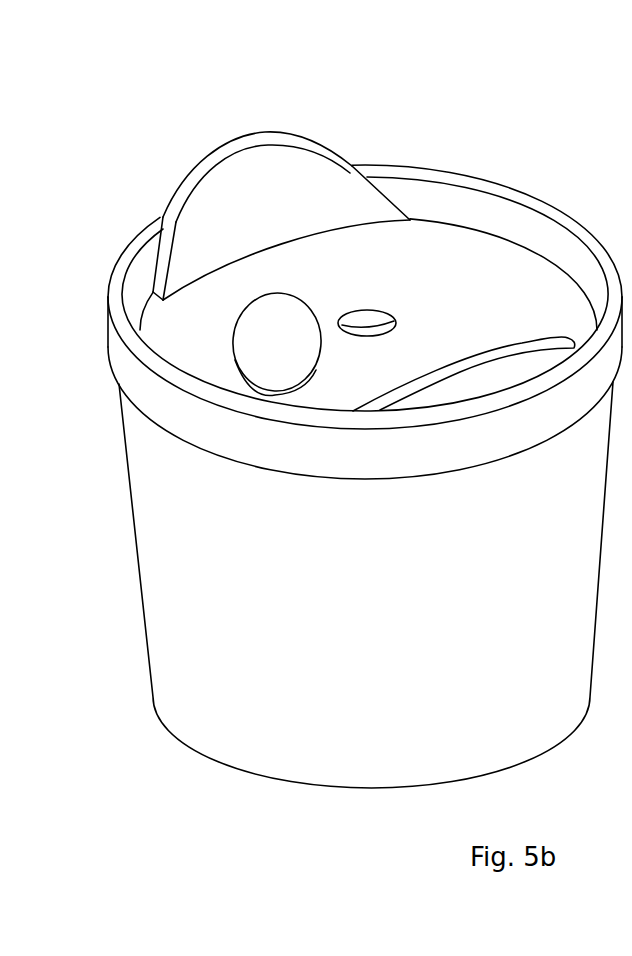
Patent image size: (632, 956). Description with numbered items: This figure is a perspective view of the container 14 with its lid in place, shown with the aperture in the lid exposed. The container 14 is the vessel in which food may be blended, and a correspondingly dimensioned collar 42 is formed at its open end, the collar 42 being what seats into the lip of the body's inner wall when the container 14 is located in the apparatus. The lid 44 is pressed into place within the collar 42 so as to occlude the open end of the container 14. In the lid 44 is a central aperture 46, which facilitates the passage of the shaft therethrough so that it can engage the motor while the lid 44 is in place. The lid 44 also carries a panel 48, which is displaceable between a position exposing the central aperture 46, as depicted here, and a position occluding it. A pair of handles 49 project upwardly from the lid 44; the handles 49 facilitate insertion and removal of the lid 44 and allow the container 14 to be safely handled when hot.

The container 14 is at (180, 650).
The collar 42 is at (460, 180).
The lid 44 is at (505, 263).
The central aperture 46 is at (367, 322).
The panel 48 is at (263, 363).
The handles 49 is at (300, 163).